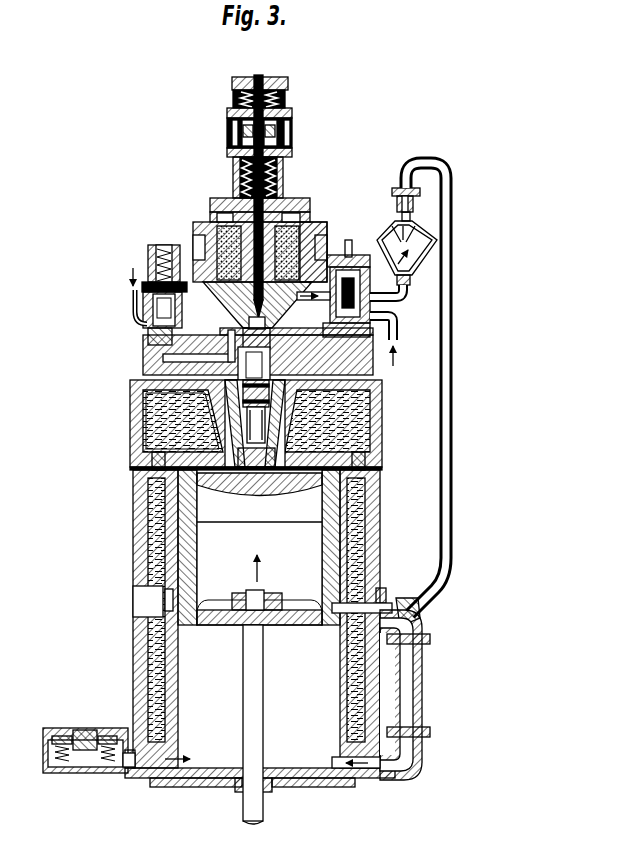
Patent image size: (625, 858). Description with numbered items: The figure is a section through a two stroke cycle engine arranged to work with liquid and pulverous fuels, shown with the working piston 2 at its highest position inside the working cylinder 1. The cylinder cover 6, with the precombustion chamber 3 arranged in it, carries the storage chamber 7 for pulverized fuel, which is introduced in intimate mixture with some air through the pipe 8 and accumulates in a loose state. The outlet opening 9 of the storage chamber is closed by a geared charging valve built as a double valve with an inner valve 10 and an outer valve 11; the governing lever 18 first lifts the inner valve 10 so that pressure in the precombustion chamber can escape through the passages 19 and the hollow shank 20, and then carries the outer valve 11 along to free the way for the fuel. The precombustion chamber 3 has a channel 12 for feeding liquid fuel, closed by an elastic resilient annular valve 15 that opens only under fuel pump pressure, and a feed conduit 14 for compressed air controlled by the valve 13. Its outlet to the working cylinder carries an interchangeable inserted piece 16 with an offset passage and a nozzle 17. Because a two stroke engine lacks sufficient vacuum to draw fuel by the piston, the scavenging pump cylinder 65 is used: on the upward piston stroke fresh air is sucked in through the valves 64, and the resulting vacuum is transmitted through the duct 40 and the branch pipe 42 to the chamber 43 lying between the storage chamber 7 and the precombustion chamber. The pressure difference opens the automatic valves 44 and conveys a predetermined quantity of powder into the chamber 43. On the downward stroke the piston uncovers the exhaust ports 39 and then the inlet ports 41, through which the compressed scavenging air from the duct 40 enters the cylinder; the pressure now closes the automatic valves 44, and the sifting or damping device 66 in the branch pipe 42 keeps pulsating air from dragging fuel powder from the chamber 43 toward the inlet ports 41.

The working cylinder 1 is at (148, 562).
The working piston 2 is at (177, 540).
The precombustion chamber 3 is at (247, 413).
The cylinder cover 6 is at (373, 407).
The storage chamber 7 is at (195, 241).
The pipe 8 is at (195, 235).
The outlet opening 9 is at (220, 333).
The inner valve 10 is at (230, 327).
The outer valve 11 is at (300, 265).
The channel 12 is at (180, 392).
The valve 13 is at (372, 336).
The feed conduit 14 is at (372, 356).
The elastic resilient annular valve 15 is at (217, 395).
The interchangeable inserted piece 16 is at (152, 466).
The nozzle 17 is at (150, 492).
The governing lever 18 is at (234, 130).
The passages 19 is at (243, 300).
The hollow shank 20 is at (234, 170).
The exhaust ports 39 is at (160, 600).
The duct 40 is at (407, 670).
The inlet ports 41 is at (360, 611).
The branch pipe 42 is at (448, 473).
The chamber 43 is at (225, 293).
The automatic valves 44 is at (190, 280).
The valves 64 is at (98, 746).
The scavenging pump cylinder 65 is at (215, 752).
The sifting or damping device 66 is at (415, 246).